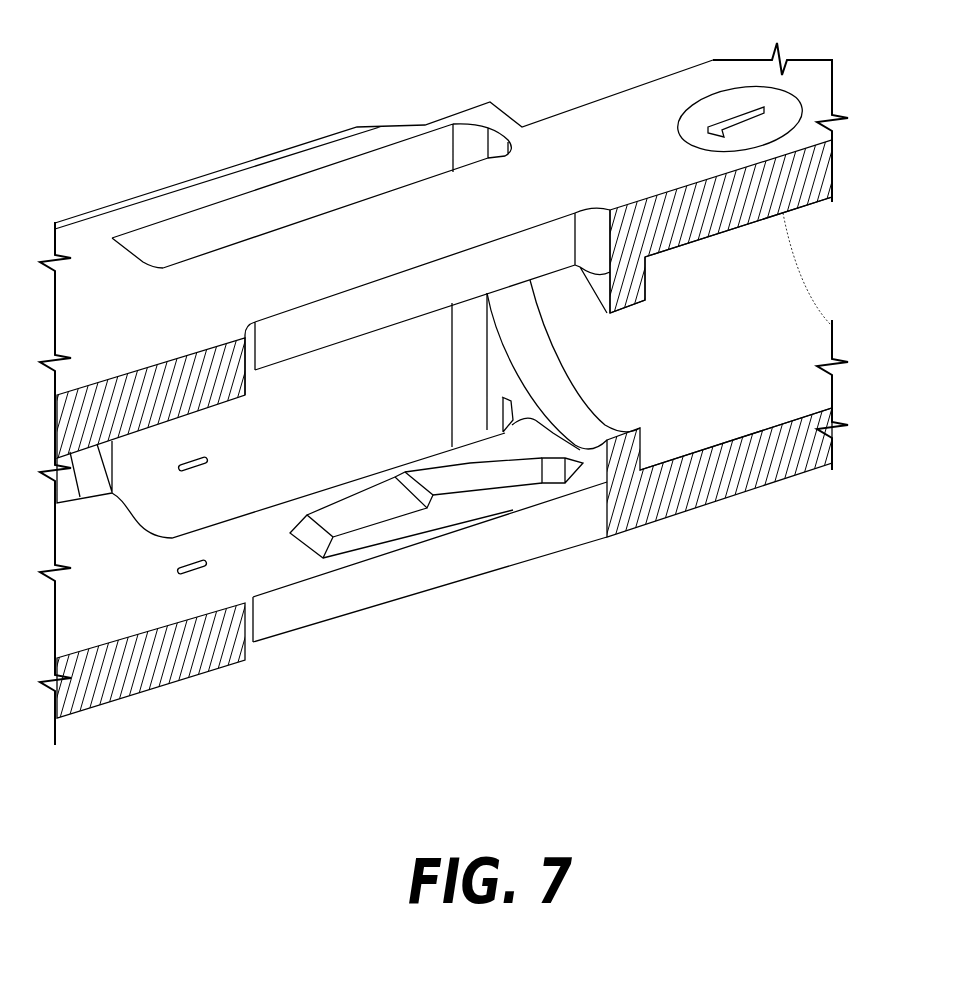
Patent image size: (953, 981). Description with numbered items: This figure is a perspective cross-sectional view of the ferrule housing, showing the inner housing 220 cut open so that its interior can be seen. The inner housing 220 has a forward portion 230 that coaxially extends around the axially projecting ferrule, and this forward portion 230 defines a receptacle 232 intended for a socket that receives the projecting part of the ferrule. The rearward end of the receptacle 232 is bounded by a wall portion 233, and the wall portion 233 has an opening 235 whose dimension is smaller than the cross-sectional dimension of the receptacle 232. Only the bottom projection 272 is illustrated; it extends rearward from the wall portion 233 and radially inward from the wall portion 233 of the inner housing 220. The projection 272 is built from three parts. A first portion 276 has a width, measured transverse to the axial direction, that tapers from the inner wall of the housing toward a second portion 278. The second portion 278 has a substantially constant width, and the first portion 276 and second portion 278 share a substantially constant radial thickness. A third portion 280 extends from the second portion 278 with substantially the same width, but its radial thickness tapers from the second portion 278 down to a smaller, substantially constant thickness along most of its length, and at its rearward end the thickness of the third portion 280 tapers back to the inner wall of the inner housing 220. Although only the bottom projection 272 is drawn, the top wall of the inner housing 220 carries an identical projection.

The inner housing 220 is at (175, 680).
The forward portion 230 is at (755, 488).
The receptacle 232 is at (796, 376).
The wall portion 233 is at (637, 284).
The opening 235 is at (560, 378).
The projection 272 is at (455, 512).
The first portion 276 is at (560, 455).
The second portion 278 is at (483, 468).
The third portion 280 is at (363, 522).